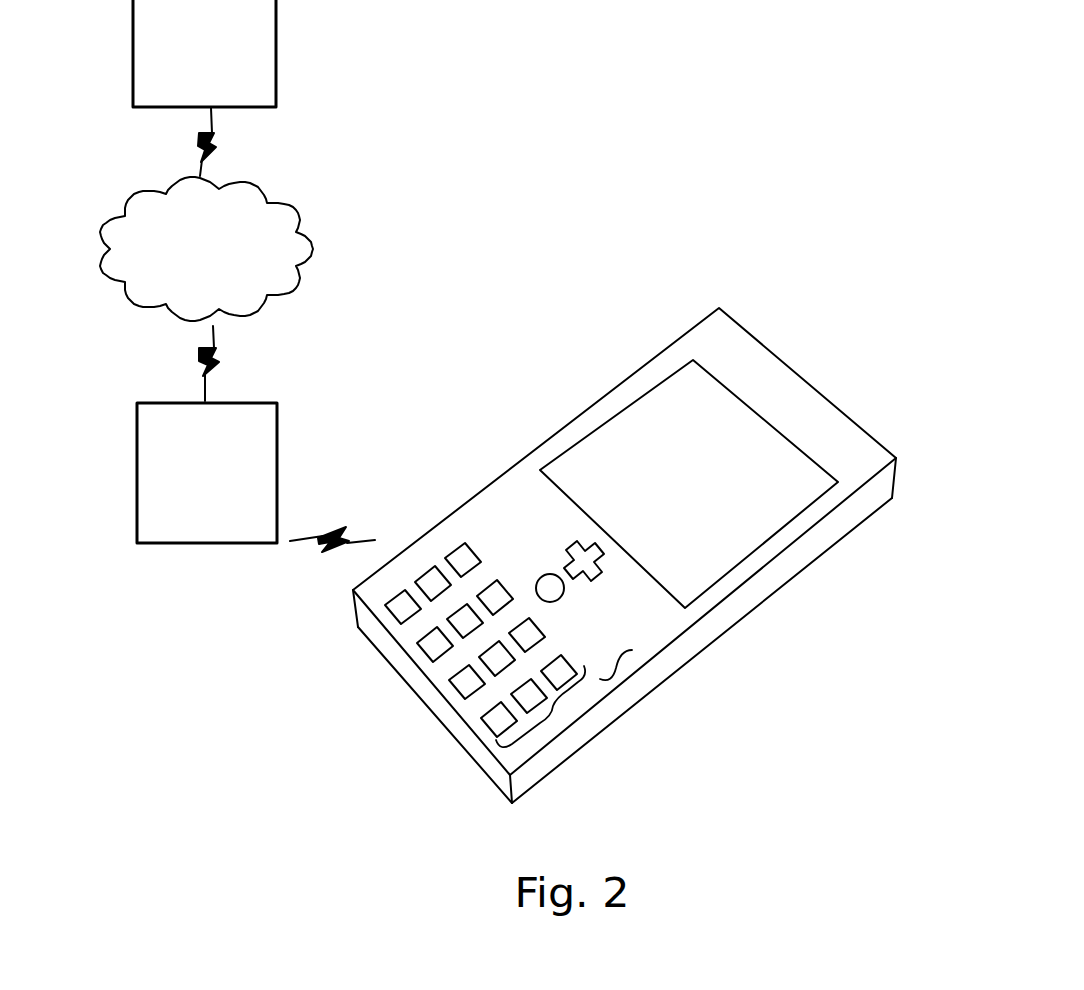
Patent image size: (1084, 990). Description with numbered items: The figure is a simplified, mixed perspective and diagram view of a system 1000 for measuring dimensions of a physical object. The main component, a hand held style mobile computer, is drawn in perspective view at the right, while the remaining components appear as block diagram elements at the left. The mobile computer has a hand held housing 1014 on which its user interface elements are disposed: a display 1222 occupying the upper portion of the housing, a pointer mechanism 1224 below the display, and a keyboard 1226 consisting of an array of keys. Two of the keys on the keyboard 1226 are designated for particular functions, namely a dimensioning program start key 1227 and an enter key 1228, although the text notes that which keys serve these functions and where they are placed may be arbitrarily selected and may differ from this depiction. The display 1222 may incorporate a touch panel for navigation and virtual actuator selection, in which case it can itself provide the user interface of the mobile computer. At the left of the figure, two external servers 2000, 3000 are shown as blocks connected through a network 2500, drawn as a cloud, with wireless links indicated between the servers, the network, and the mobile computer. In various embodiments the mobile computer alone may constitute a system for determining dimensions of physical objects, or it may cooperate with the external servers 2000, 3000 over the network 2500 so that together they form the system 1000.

The system 1000 is at (565, 340).
The hand held housing 1014 is at (622, 672).
The display 1222 is at (712, 538).
The pointer mechanism 1224 is at (603, 567).
The keyboard 1226 is at (565, 722).
The dimensioning program start key 1227 is at (497, 583).
The enter key 1228 is at (518, 624).
The external server 2000 is at (207, 473).
The network 2500 is at (206, 249).
The external server 3000 is at (204, 53).